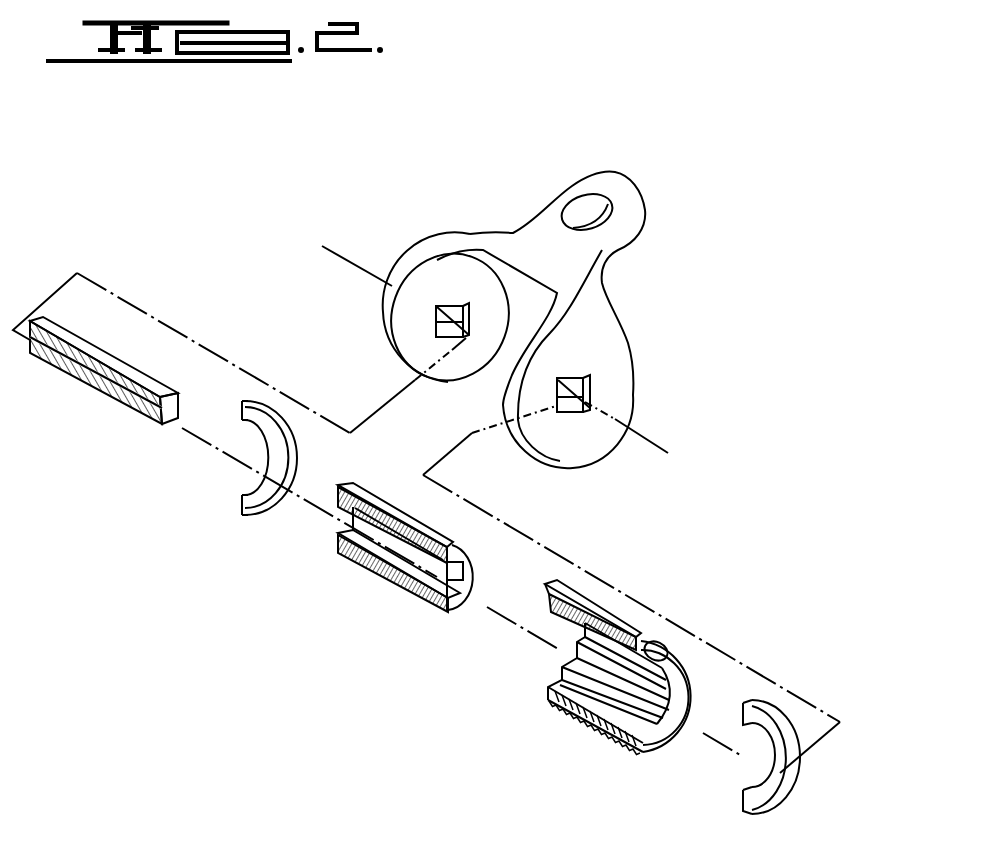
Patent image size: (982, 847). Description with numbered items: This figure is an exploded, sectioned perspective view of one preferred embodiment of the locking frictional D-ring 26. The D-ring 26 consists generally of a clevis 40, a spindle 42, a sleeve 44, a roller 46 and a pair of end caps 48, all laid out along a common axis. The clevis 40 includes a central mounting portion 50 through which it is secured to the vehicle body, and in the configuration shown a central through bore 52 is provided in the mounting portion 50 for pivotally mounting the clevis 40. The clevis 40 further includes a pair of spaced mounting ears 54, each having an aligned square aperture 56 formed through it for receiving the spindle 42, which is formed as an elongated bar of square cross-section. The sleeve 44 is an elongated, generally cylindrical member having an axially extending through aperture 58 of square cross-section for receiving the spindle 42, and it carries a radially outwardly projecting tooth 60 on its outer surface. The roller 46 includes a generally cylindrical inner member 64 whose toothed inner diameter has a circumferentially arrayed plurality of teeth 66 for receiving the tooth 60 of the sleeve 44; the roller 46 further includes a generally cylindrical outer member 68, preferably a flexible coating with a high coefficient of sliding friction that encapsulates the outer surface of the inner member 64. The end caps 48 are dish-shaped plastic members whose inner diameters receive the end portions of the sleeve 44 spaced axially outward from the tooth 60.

The locking frictional D-ring 26 is at (655, 331).
The clevis 40 is at (618, 383).
The spindle 42 is at (97, 352).
The sleeve 44 is at (432, 528).
The roller 46 is at (670, 648).
The end caps 48 is at (258, 514).
The central mounting portion 50 is at (513, 232).
The central through bore 52 is at (594, 202).
The mounting ears 54 is at (521, 425).
The square aperture 56 is at (463, 316).
The through aperture 58 is at (458, 574).
The tooth 60 is at (390, 502).
The inner member 64 is at (677, 685).
The teeth 66 is at (609, 642).
The outer member 68 is at (603, 608).